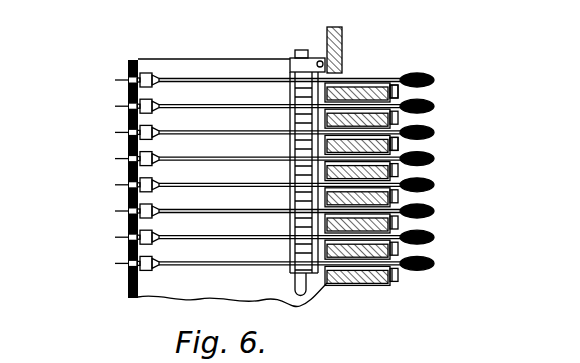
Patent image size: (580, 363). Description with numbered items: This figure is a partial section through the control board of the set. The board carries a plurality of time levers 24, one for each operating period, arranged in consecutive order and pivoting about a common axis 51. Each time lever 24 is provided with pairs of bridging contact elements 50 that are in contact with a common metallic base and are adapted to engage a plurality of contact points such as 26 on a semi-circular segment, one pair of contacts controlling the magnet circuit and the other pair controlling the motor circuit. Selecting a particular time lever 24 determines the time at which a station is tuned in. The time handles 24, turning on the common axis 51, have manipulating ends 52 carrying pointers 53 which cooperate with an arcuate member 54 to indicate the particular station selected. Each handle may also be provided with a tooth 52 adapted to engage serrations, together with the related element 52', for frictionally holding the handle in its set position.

The time lever 24 is at (226, 130).
The contact point 26 is at (125, 83).
The bridging contact element 50 is at (154, 100).
The common axis 51 is at (305, 289).
The manipulating end 52 is at (431, 158).
The insulating block 52' is at (361, 161).
The pointer 53 is at (400, 91).
The arcuate member 54 is at (396, 131).